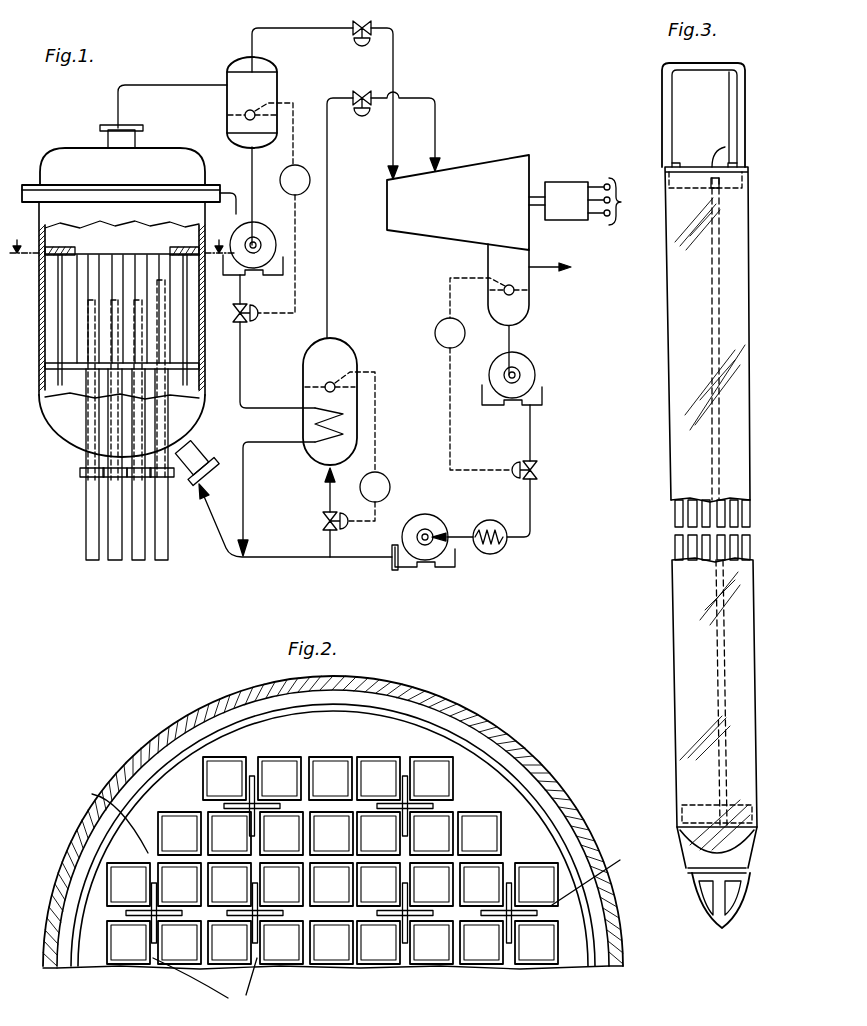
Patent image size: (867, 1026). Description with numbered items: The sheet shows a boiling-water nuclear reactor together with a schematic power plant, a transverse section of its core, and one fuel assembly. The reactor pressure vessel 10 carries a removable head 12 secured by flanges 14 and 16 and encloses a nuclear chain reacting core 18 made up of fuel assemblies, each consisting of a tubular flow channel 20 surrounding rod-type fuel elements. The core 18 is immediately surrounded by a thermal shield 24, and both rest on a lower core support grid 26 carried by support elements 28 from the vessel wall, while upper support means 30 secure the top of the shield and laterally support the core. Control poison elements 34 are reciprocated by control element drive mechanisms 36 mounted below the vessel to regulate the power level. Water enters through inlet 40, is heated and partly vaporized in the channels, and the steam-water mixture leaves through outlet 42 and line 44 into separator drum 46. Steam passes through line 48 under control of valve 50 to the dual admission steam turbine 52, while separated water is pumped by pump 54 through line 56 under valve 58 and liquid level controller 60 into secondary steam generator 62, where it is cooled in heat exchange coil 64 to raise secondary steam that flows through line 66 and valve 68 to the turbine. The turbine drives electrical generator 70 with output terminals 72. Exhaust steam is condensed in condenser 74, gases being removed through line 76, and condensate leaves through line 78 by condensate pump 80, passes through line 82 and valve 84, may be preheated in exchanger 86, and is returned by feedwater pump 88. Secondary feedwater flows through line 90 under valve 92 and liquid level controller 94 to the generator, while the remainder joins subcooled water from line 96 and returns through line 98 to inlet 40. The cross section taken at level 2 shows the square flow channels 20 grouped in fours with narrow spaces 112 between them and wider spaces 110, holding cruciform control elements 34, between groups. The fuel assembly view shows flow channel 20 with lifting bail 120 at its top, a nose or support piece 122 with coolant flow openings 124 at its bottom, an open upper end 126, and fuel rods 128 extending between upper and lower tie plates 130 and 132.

In FIG. 1, the section level 2— 2 is at (122, 236).
In FIG. 1, the reactor pressure vessel 10 is at (205, 327).
In FIG. 2, the reactor pressure vessel 10 is at (520, 752).
In FIG. 1, the removable head 12 is at (160, 155).
In FIG. 1, the flange 14 is at (218, 186).
In FIG. 1, the flange 16 is at (234, 205).
In FIG. 1, the nuclear chain reacting core 18 is at (143, 253).
In FIG. 2, the nuclear chain reacting core 18 is at (109, 815).
In FIG. 1, the tubular flow channel 20 is at (92, 283).
In FIG. 2, the tubular flow channel 20 is at (108, 867).
In FIG. 3, the tubular flow channel 20 is at (740, 236).
In FIG. 1, the thermal shield 24 is at (58, 272).
In FIG. 2, the thermal shield 24 is at (140, 783).
In FIG. 1, the lower core support structure or grid 26 is at (75, 372).
In FIG. 1, the support elements 28 is at (48, 395).
In FIG. 1, the upper support means 30 is at (50, 247).
In FIG. 1, the control poison elements 34 is at (165, 292).
In FIG. 2, the control poison elements 34 is at (493, 909).
In FIG. 1, the control element drive mechanisms 36 is at (163, 558).
In FIG. 1, the inlet 40 is at (195, 457).
In FIG. 1, the outlet 42 is at (100, 128).
In FIG. 1, the line 44 is at (185, 85).
In FIG. 1, the separator drum 46 is at (227, 103).
In FIG. 1, the line 48 is at (305, 30).
In FIG. 1, the valve 50 is at (354, 40).
In FIG. 1, the dual admission steam turbine 52 is at (443, 232).
In FIG. 1, the pump 54 is at (270, 233).
In FIG. 1, the line 56 is at (241, 298).
In FIG. 1, the valve 58 is at (243, 334).
In FIG. 1, the liquid level controller 60 is at (303, 165).
In FIG. 1, the secondary steam generator 62 is at (343, 343).
In FIG. 1, the heat exchange coil 64 is at (347, 428).
In FIG. 1, the line 66 is at (330, 258).
In FIG. 1, the valve 68 is at (352, 92).
In FIG. 1, the electrical generator 70 is at (570, 221).
In FIG. 1, the output terminals 72 is at (621, 202).
In FIG. 1, the condenser 74 is at (500, 256).
In FIG. 1, the line 76 is at (542, 270).
In FIG. 1, the line 78 is at (512, 337).
In FIG. 1, the condensate pump 80 is at (535, 367).
In FIG. 1, the line 82 is at (532, 512).
In FIG. 1, the valve 84 is at (537, 472).
In FIG. 1, the exchanger 86 is at (493, 549).
In FIG. 1, the feedwater pump 88 is at (433, 523).
In FIG. 1, the line 90 is at (330, 548).
In FIG. 1, the valve 92 is at (324, 522).
In FIG. 1, the liquid level controller 94 is at (387, 473).
In FIG. 1, the line 96 is at (244, 502).
In FIG. 1, the line 98 is at (240, 550).
In FIG. 2, the wider spaces 110 is at (397, 893).
In FIG. 2, the narrow spaces 112 is at (498, 853).
In FIG. 3, the lifting bail 120 is at (662, 100).
In FIG. 3, the nose or support piece 122 is at (747, 852).
In FIG. 3, the coolant flow openings 124 is at (733, 898).
In FIG. 3, the open upper end 126 is at (715, 167).
In FIG. 3, the fuel elements or rods 128 is at (722, 303).
In FIG. 3, the upper tie plate 130 is at (719, 188).
In FIG. 3, the lower tie plate 132 is at (746, 798).